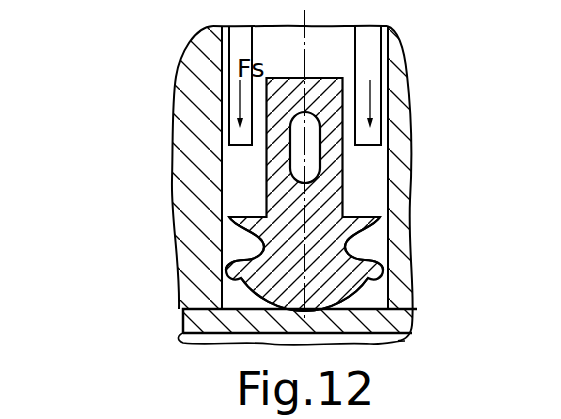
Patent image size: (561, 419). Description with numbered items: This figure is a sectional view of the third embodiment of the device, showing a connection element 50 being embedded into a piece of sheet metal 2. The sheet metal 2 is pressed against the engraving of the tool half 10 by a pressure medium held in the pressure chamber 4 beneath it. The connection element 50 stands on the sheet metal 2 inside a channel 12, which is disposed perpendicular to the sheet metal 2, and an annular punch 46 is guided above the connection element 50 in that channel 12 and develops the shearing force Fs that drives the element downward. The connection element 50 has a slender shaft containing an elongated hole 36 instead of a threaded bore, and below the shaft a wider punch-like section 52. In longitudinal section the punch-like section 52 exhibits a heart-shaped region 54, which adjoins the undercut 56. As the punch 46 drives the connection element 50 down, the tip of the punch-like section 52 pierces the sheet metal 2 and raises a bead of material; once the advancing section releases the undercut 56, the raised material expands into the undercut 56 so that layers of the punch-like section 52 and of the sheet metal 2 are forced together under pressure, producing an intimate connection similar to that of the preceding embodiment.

The tool half 10 is at (394, 93).
The channel 12 is at (242, 173).
The annular punch 46 is at (365, 101).
The elongated hole 36 is at (313, 152).
The connection element 50 is at (366, 178).
The punch-like section 52 is at (236, 237).
The undercut 56 is at (348, 249).
The heart-shaped region 54 is at (323, 283).
The sheet metal 2 is at (388, 313).
The pressure chamber 4 is at (405, 340).